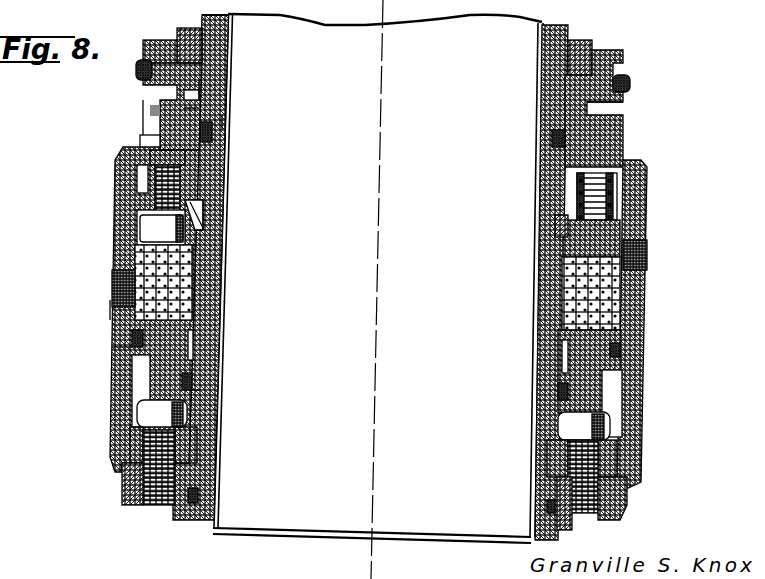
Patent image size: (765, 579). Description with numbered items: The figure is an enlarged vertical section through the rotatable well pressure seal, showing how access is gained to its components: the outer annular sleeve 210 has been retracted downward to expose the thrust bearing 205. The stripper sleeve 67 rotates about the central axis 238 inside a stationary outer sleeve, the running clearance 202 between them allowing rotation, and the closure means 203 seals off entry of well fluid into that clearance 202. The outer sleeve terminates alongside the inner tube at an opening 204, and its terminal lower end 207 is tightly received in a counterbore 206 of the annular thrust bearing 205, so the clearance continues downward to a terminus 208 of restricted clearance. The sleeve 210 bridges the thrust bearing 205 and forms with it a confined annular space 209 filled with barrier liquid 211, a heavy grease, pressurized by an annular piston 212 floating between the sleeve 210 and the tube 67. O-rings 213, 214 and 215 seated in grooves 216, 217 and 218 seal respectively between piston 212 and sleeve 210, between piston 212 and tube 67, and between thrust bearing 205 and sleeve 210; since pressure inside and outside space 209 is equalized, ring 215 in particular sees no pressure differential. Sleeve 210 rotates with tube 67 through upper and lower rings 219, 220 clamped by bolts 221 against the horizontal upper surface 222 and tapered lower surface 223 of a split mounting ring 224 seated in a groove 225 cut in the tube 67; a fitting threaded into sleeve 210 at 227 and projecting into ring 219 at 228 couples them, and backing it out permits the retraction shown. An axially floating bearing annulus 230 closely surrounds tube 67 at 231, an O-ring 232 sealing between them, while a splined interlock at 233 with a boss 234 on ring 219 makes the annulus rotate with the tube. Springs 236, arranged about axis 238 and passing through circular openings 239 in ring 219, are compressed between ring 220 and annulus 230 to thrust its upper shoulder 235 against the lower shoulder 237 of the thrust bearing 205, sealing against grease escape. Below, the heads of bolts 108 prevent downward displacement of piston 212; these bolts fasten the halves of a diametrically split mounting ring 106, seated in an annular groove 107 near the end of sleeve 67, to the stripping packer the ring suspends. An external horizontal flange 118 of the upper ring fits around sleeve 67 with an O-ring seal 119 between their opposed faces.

The stripper sleeve 67 is at (220, 40).
The split mounting ring 106 is at (135, 445).
The annular groove 107 is at (547, 456).
The bolts 108 is at (178, 443).
The external horizontal flange 118 is at (132, 486).
The O-ring seal 119 is at (547, 504).
The running clearance 202 is at (200, 50).
The closure means 203 is at (66, 301).
The opening 204 is at (190, 67).
The annular thrust bearing 205 is at (156, 97).
The counterbore 206 is at (181, 29).
The terminal lower end 207 is at (201, 17).
The terminus of restricted clearance 208 is at (598, 108).
The confined annular space 209 is at (148, 114).
The annular sleeve 210 is at (114, 385).
The barrier liquid 211 is at (164, 282).
The annular piston 212 is at (170, 343).
The O-ring 213 is at (113, 349).
The O-ring 214 is at (193, 382).
The O-ring 215 is at (137, 70).
The groove 216 is at (133, 333).
The groove 217 is at (196, 389).
The groove 218 is at (143, 53).
The upper ring 219 is at (197, 175).
The lower ring 220 is at (142, 218).
The bolts 221 is at (177, 190).
The horizontal upper annular surface 222 is at (193, 205).
The tapered lower annular surface 223 is at (200, 230).
The split mounting ring 224 is at (207, 213).
The groove 225 is at (203, 210).
The threaded connection 227 is at (113, 277).
The fitting engagement 228 is at (143, 178).
The bearing annulus 230 is at (187, 108).
The close surrounding portion 231 is at (199, 148).
The O-ring 232 is at (225, 122).
The splined interlock 233 is at (152, 127).
The boss 234 is at (150, 142).
The upper annular shoulder 235 is at (202, 88).
The springs 236 is at (577, 179).
The lower shoulder 237 is at (203, 100).
The central axis 238 is at (383, 185).
The circular openings 239 is at (577, 199).